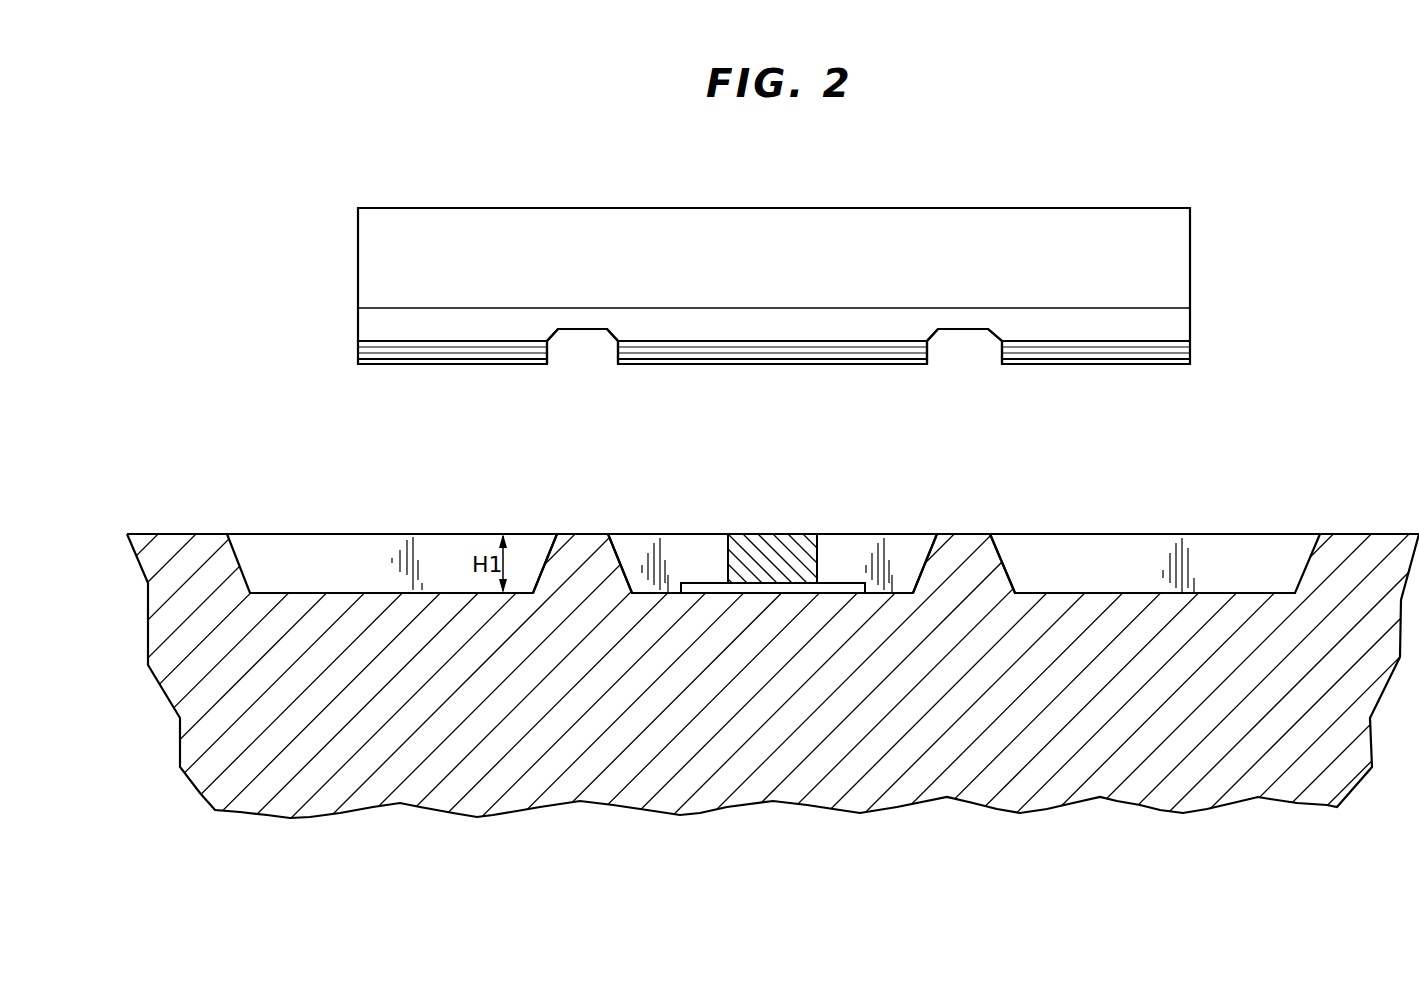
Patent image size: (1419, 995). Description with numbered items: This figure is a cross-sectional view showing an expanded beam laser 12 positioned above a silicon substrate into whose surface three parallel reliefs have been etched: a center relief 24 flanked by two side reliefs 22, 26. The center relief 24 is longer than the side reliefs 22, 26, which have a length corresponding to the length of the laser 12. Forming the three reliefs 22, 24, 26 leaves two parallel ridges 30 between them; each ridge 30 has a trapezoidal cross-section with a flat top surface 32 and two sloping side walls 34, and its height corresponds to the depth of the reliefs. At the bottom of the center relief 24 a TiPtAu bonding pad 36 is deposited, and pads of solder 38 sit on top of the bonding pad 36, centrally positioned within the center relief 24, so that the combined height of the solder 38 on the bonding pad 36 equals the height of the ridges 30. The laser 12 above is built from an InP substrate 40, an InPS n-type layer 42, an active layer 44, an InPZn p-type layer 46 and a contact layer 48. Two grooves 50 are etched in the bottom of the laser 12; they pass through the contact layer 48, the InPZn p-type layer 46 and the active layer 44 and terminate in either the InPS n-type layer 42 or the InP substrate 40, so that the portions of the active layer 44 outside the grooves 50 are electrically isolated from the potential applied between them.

The laser 12 is at (1068, 209).
The side relief 22 is at (1228, 550).
The center relief 24 is at (690, 548).
The side relief 26 is at (275, 548).
The ridge 30 is at (605, 534).
The flat top surface 32 is at (575, 534).
The sloping side wall 34 is at (545, 560).
The bonding pad 36 is at (838, 580).
The pad of solder 38 is at (768, 534).
The InP substrate 40 is at (1168, 250).
The InPS n-type layer 42 is at (1180, 317).
The active layer 44 is at (1190, 342).
The InPZn p-type layer 46 is at (1190, 353).
The contact layer 48 is at (1060, 365).
The groove 50 is at (568, 352).